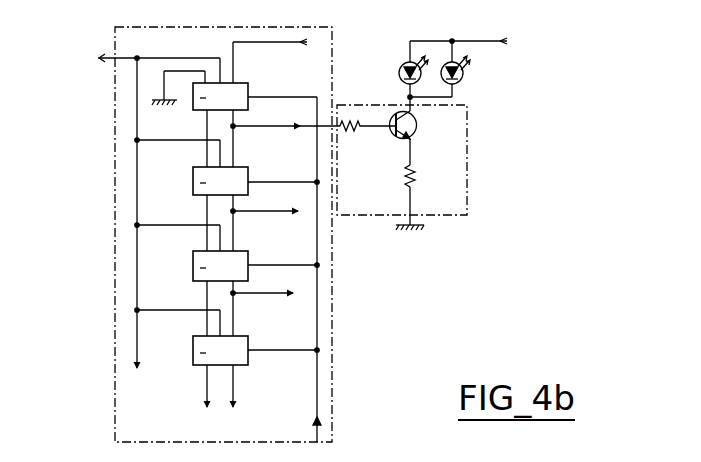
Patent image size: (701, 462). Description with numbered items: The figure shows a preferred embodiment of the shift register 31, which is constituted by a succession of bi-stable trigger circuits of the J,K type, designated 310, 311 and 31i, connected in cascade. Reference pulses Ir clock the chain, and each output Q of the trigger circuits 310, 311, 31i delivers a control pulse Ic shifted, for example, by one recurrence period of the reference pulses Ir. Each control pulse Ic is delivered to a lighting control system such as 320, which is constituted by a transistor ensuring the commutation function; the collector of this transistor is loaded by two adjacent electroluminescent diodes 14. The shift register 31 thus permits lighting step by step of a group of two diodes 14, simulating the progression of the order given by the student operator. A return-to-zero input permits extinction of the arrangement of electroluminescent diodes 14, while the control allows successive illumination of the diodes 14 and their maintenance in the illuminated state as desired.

The shift register 31 is at (115, 352).
The bi-stable trigger circuit 310 is at (198, 111).
The bi-stable trigger circuit 311 is at (200, 196).
The bi-stable trigger circuit 31i is at (196, 366).
The lighting control system 320 is at (453, 199).
The electroluminescent diodes 14 is at (421, 79).